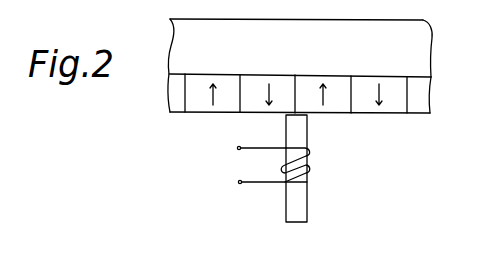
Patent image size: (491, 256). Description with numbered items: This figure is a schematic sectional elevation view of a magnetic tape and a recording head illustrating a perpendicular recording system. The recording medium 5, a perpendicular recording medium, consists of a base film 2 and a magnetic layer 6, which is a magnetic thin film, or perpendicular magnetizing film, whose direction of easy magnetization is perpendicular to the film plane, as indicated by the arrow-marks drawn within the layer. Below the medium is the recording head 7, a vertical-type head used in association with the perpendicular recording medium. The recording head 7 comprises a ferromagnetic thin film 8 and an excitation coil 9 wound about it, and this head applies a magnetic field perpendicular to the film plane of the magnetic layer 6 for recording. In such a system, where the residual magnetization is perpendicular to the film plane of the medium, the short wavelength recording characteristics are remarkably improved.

The base film 2 is at (432, 34).
The recording medium 5 is at (457, 80).
The magnetic layer 6 is at (430, 100).
The recording head 7 is at (307, 165).
The ferromagnetic thin film 8 is at (308, 206).
The excitation coil 9 is at (251, 183).